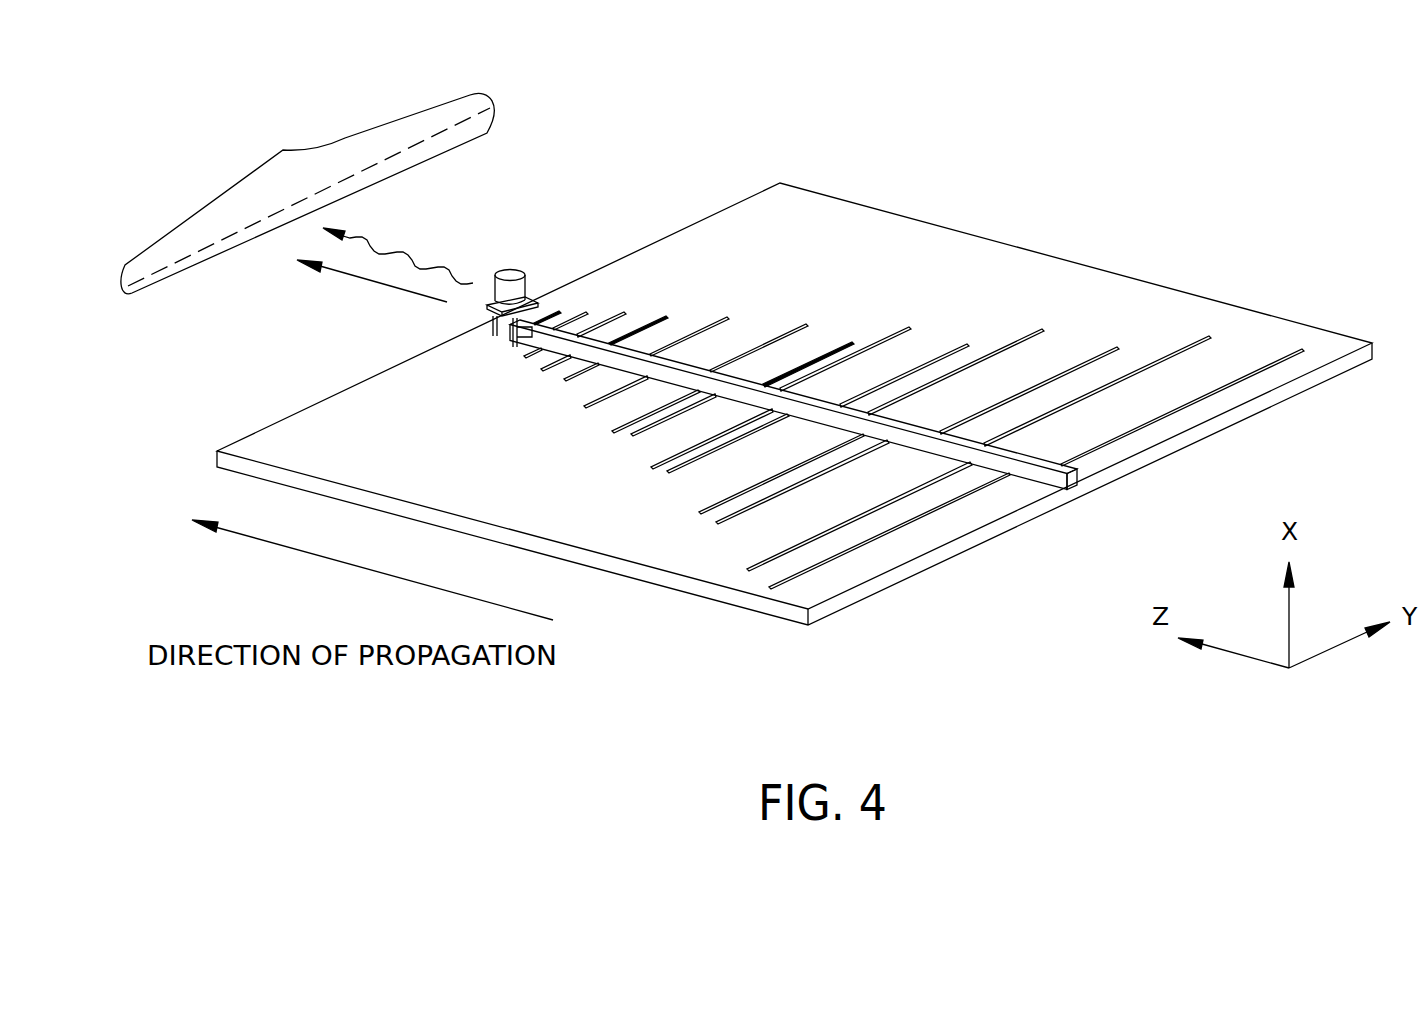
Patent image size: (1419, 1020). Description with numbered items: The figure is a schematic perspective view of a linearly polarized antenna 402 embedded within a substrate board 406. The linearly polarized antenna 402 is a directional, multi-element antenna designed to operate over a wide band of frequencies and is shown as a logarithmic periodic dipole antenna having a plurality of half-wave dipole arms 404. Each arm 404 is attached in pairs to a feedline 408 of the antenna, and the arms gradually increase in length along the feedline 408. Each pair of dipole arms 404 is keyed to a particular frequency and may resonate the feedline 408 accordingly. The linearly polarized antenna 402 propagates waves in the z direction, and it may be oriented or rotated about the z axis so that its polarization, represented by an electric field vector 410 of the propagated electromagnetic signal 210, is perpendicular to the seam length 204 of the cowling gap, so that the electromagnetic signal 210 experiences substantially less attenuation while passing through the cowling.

The seam length 204 is at (283, 150).
The electromagnetic signal 210 is at (413, 247).
The electric field vector 410 is at (383, 287).
The feedline 408 is at (767, 372).
The substrate board 406 is at (887, 237).
The half-wave dipole arms 404 is at (1165, 425).
The linearly polarized antenna 402 is at (1080, 484).